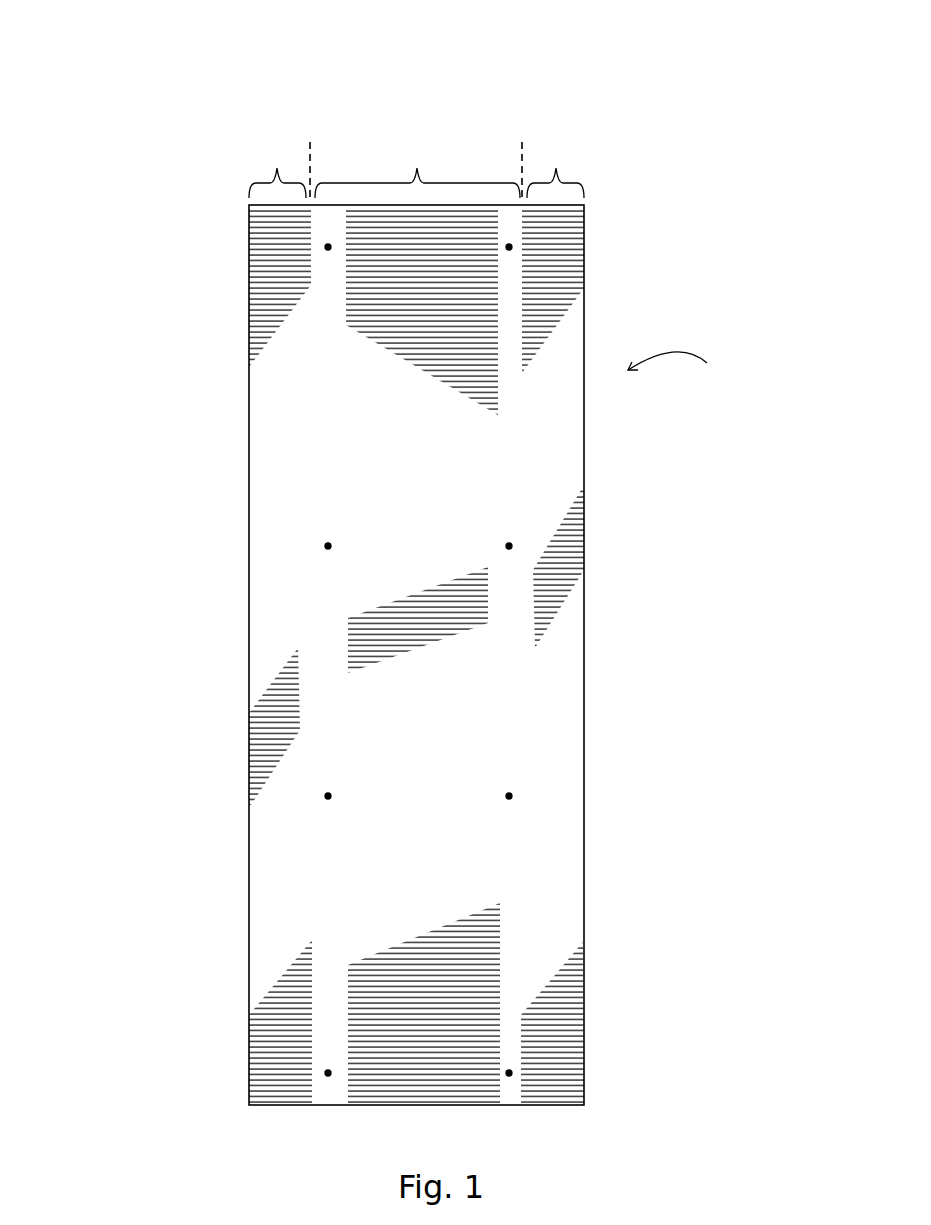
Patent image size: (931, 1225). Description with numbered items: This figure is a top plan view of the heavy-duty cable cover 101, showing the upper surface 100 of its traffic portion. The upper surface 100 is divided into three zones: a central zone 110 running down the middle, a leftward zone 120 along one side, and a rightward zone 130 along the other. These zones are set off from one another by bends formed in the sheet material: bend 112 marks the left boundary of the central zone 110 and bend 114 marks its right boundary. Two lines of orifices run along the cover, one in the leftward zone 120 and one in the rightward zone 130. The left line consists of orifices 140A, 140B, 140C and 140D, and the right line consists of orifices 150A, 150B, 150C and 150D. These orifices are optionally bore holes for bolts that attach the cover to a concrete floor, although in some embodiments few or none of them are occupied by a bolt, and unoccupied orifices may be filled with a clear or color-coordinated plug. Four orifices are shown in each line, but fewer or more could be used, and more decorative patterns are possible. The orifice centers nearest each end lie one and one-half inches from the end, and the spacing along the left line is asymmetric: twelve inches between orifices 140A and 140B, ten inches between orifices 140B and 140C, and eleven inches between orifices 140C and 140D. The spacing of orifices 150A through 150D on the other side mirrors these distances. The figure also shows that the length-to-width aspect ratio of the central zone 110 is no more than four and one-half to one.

The upper surface 100 is at (318, 655).
The heavy-duty cable cover 101 is at (690, 372).
The central zone 110 is at (417, 167).
The bend 112 is at (251, 114).
The bend 114 is at (588, 119).
The leftward zone 120 is at (229, 125).
The rightward zone 130 is at (612, 133).
The orifice 140A is at (205, 209).
The orifice 140B is at (205, 510).
The orifice 140C is at (205, 757).
The orifice 140D is at (205, 1034).
The orifice 150A is at (624, 214).
The orifice 150B is at (623, 514).
The orifice 150C is at (624, 762).
The orifice 150D is at (625, 1040).